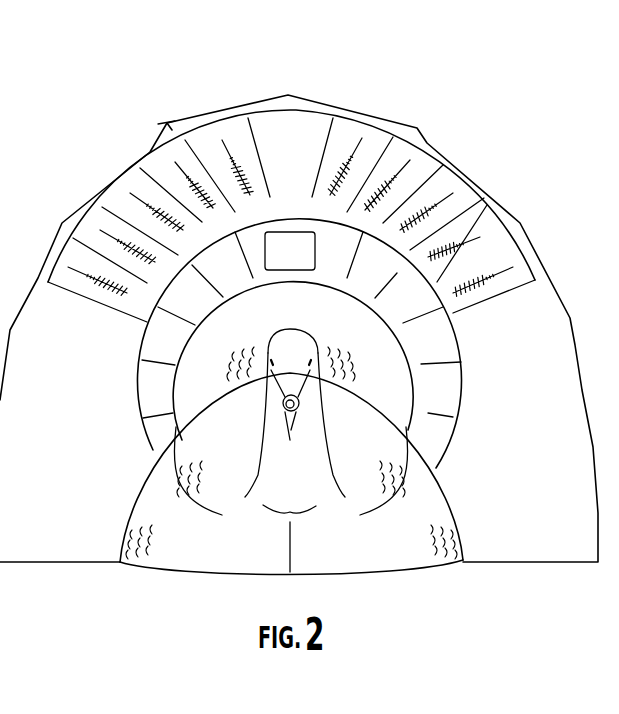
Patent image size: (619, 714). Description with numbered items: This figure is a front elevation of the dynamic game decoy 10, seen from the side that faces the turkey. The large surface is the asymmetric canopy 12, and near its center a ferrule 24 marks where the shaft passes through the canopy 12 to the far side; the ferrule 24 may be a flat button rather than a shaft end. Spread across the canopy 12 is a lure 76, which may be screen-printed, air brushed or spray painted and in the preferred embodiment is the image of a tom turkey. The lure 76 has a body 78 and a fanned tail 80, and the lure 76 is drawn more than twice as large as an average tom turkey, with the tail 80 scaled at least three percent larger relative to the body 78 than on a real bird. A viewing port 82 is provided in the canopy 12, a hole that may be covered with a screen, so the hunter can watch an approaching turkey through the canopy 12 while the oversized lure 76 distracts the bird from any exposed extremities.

The decoy 10 is at (323, 95).
The asymmetric canopy 12 is at (378, 119).
The ferrule 24 is at (299, 403).
The lure 76 is at (437, 274).
The body 78 is at (420, 477).
The tail 80 is at (167, 123).
The viewing port 82 is at (315, 240).